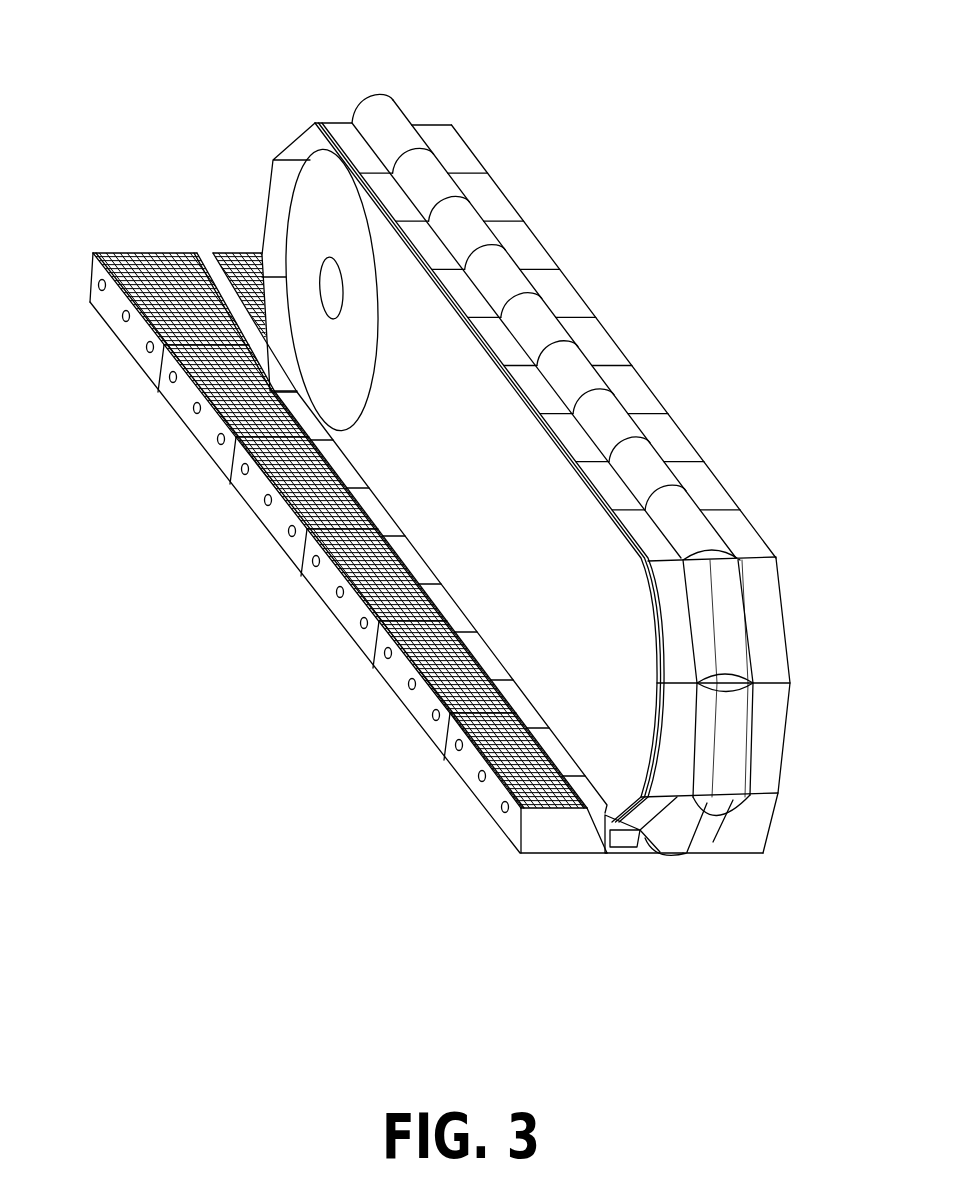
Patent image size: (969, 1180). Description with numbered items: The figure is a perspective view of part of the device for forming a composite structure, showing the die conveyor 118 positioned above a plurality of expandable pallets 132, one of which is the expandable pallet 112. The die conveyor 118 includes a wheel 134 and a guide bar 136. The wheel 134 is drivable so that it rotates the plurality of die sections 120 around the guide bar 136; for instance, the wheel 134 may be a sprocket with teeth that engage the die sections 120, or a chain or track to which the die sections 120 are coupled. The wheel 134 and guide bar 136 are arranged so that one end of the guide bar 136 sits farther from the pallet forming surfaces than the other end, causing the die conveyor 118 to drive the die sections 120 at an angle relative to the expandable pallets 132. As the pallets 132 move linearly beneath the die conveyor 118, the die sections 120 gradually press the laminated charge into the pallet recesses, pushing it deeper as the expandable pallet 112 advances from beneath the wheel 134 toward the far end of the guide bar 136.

The die conveyor 118 is at (258, 90).
The plurality of expandable pallets 132 is at (108, 220).
The wheel 134 is at (272, 241).
The plurality of die sections 120 is at (801, 630).
The guide bar 136 is at (611, 823).
The expandable pallet 112 is at (556, 868).